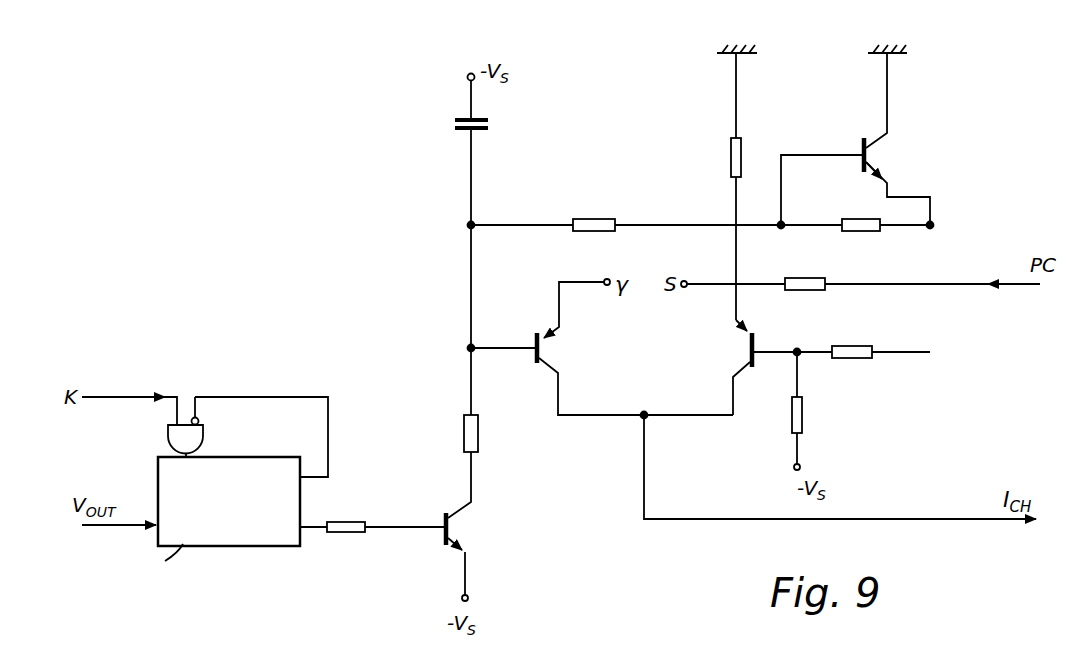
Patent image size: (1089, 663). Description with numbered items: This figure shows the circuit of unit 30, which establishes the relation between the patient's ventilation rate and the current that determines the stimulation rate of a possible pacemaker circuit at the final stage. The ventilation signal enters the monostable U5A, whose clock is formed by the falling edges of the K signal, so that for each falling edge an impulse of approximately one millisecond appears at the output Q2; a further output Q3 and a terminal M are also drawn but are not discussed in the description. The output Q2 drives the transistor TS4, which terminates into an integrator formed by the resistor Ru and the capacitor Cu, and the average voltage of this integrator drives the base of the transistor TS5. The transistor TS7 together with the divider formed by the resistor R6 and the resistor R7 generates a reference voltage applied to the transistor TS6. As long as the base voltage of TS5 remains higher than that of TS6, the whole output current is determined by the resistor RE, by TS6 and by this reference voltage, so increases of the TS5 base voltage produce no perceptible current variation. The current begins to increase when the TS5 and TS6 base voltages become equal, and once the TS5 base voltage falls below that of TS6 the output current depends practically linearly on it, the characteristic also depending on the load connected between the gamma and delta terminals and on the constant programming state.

The unit 30 is at (930, 120).
The transistor TS4 is at (404, 526).
The transistor TS5 is at (602, 347).
The transistor TS6 is at (813, 367).
The transistor TS7 is at (895, 116).
The resistor R6 is at (852, 368).
The resistor R7 is at (815, 411).
The resistor RE is at (717, 186).
The resistor Ru is at (488, 433).
The capacitor Cu is at (489, 153).
The ground M is at (747, 37).
The monostable U5/A U5A is at (205, 492).
The output Q2 is at (278, 528).
The counter output Q3 is at (278, 481).